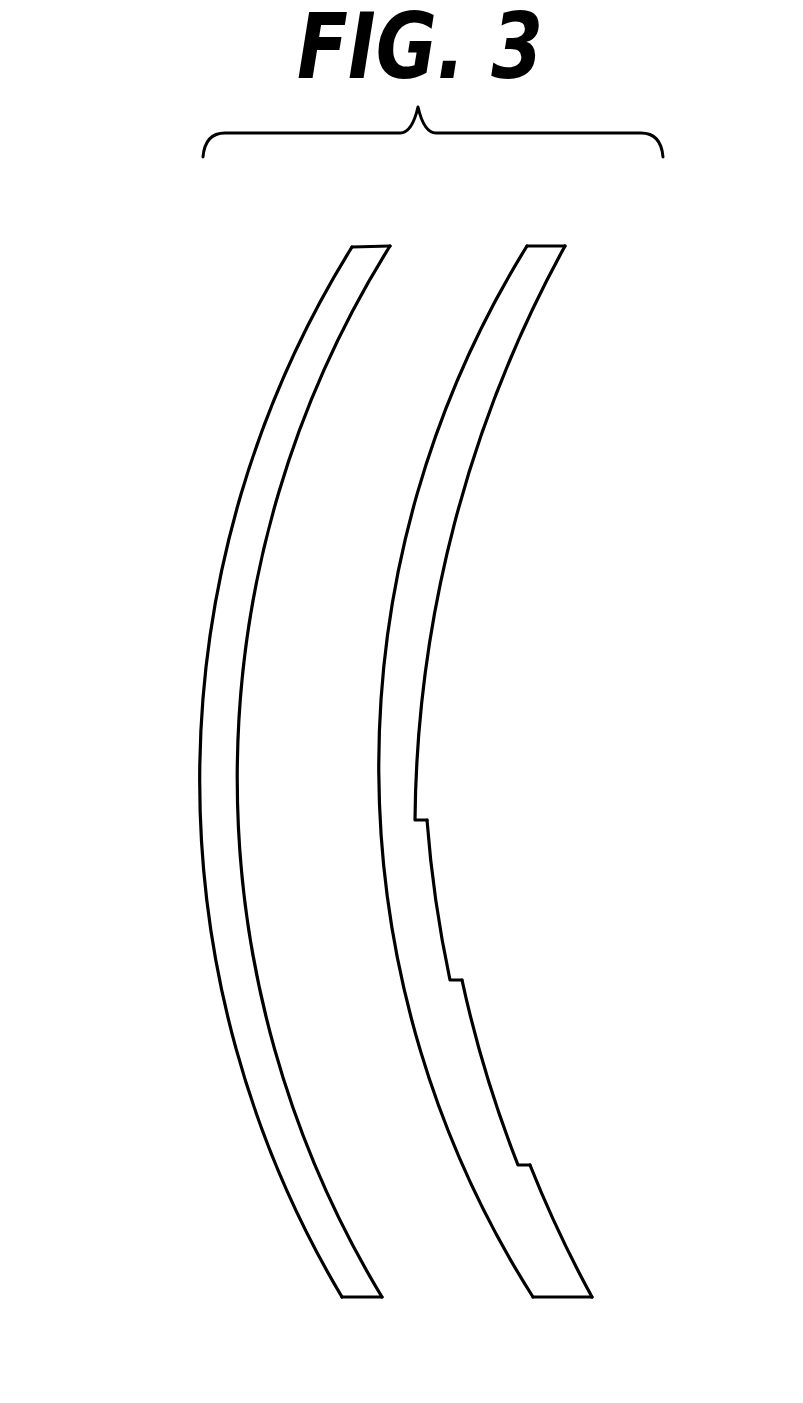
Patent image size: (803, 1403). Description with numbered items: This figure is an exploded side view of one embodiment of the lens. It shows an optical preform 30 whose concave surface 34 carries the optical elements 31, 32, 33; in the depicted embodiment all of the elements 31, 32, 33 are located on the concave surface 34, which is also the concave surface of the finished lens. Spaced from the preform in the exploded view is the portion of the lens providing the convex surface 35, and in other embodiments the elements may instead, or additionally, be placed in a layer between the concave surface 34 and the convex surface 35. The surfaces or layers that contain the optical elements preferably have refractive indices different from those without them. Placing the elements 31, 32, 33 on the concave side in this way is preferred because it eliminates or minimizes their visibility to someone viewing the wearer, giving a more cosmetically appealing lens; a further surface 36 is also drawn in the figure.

The optical preform 30 is at (505, 390).
The optical element 31 is at (437, 887).
The optical element 32 is at (487, 1065).
The optical element 33 is at (548, 1208).
The concave surface 34 is at (423, 670).
The convex surface 35 is at (200, 730).
The inner surface of front lens element 36 is at (293, 468).